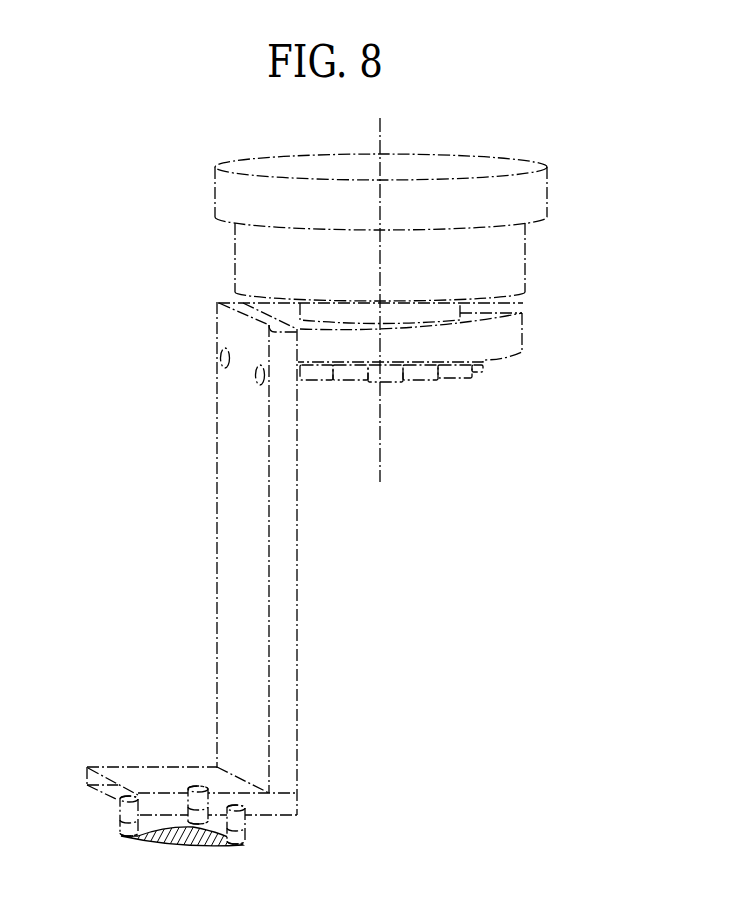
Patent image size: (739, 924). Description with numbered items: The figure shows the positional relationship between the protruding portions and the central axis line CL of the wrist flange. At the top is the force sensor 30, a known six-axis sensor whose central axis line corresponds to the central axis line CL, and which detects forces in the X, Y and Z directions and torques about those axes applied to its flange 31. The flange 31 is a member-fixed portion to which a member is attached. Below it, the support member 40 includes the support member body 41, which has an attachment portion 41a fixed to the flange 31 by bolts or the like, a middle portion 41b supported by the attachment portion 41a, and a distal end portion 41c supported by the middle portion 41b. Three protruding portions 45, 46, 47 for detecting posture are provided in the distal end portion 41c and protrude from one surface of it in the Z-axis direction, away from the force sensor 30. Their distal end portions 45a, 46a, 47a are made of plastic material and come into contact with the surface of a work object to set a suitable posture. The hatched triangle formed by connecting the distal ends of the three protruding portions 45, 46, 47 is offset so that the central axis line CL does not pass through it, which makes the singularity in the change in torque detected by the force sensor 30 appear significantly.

The force sensor 30 is at (527, 242).
The flange 31 is at (522, 310).
The bracket assembly 40 is at (212, 455).
The support member body 41 is at (298, 535).
The attachment portion 41a is at (523, 340).
The middle portion 41b is at (298, 630).
The distal end portion 41c is at (300, 805).
The protruding portion 45 is at (245, 820).
The distal end portion of protruding portion 45a is at (238, 843).
The protruding portion 46 is at (187, 800).
The distal end portion of protruding portion 46a is at (170, 827).
The protruding portion 47 is at (118, 808).
The distal end portion of protruding portion 47a is at (122, 835).
The central axis line CL is at (381, 442).